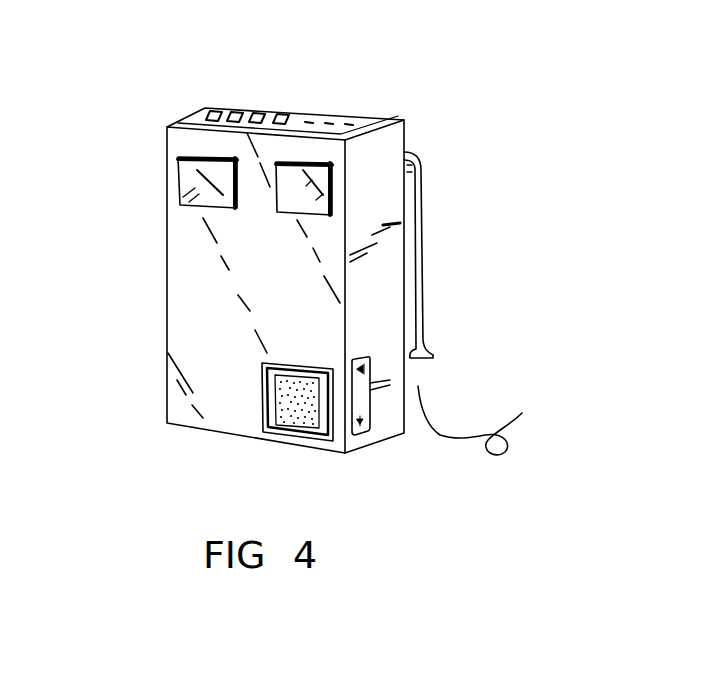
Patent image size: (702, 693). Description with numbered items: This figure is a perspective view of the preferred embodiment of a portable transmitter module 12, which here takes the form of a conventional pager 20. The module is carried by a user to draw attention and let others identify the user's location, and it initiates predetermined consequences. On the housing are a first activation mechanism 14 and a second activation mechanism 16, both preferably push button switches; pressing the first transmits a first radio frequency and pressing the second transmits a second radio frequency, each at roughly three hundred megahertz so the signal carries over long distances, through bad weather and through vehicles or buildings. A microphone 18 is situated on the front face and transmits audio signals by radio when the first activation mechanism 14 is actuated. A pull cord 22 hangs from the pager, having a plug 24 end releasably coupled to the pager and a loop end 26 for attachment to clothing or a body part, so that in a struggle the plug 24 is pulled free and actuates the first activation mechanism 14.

The transmitter module 12 is at (403, 121).
The first activation mechanism 14 is at (182, 203).
The second activation mechanism 16 is at (316, 205).
The microphone 18 is at (275, 402).
The pager 20 is at (201, 110).
The pull cord 22 is at (370, 370).
The plug 24 is at (367, 405).
The loop end 26 is at (522, 413).